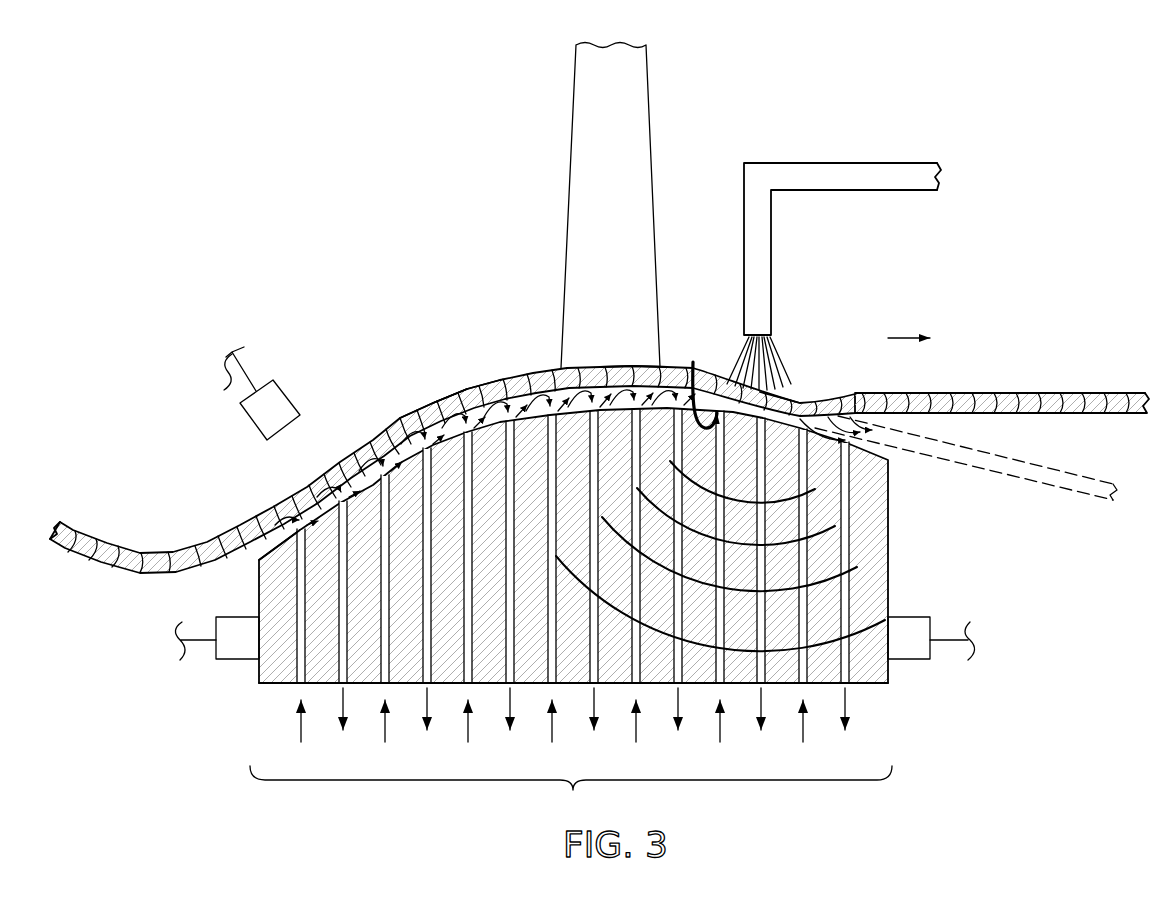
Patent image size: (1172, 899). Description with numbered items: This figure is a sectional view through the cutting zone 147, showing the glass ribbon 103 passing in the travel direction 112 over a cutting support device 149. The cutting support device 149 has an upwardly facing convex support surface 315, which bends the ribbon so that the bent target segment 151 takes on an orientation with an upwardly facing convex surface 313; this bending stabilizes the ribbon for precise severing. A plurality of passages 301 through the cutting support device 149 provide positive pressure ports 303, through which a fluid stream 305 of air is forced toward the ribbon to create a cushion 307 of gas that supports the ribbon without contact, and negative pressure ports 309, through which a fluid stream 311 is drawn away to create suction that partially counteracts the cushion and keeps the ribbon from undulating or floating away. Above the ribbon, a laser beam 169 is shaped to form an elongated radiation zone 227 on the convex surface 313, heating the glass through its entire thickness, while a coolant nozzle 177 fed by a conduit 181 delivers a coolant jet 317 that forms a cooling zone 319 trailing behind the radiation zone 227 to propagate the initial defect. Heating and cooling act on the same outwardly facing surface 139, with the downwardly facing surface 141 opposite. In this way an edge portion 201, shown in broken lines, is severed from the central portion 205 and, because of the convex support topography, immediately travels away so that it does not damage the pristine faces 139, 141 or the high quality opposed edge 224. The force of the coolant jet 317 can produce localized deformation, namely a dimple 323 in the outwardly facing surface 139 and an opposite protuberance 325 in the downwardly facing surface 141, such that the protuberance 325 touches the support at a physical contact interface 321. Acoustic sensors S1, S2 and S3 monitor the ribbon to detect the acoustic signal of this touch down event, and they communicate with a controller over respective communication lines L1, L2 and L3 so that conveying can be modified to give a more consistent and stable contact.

The glass ribbon 103 is at (137, 552).
The travel direction 112 is at (908, 338).
The outwardly facing surface 139 is at (990, 391).
The downwardly facing surface 141 is at (1036, 415).
The cutting zone 147 is at (571, 793).
The cutting support device 149 is at (241, 752).
The bent target segment 151 is at (410, 416).
The laser beam 169 is at (617, 113).
The coolant nozzle 177 is at (772, 279).
The conduit 181 is at (876, 163).
The edge portion 201 is at (1065, 489).
The central portion 205 is at (1046, 395).
The opposed edge 224 is at (1119, 396).
The elongated radiation zone 227 is at (640, 364).
The passages 301 is at (871, 582).
The positive pressure ports 303 is at (808, 538).
The fluid stream 305 is at (801, 722).
The cushion 307 is at (260, 547).
The negative pressure ports 309 is at (851, 508).
The fluid stream 311 is at (850, 712).
The upwardly facing convex surface 313 is at (466, 386).
The upwardly facing convex support surface 315 is at (365, 486).
The coolant jet 317 is at (745, 350).
The cooling zone 319 is at (806, 394).
The physical contact interface 321 is at (853, 430).
The dimple 323 is at (777, 397).
The protuberance 325 is at (698, 383).
The acoustic sensor S1 is at (910, 660).
The acoustic sensor S2 is at (240, 660).
The acoustic sensor S3 is at (285, 393).
The communication line L1 is at (954, 658).
The communication line L2 is at (194, 657).
The communication line L3 is at (214, 387).